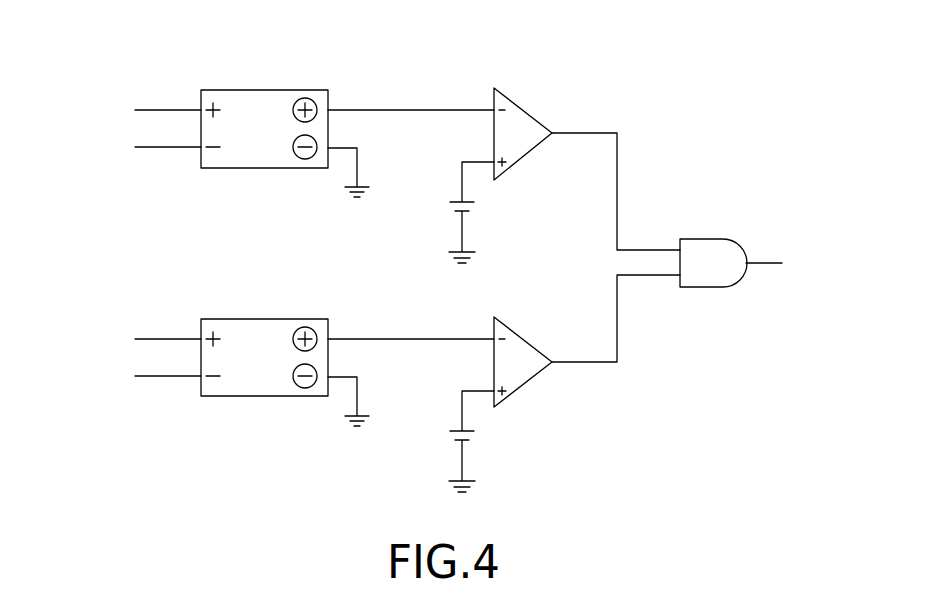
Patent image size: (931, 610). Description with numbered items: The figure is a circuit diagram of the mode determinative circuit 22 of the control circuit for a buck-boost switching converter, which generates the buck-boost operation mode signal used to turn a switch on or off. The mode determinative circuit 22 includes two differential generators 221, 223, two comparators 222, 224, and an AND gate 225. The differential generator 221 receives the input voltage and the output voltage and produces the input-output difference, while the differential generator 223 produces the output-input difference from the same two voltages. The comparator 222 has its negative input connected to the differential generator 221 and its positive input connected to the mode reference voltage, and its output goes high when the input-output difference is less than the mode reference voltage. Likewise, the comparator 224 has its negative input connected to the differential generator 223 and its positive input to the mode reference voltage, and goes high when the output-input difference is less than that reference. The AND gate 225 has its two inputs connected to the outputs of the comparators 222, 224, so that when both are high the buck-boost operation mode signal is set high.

The mode determinative circuit 22 is at (260, 556).
The differential generator 221 is at (267, 90).
The comparator 222 is at (527, 105).
The differential generator 223 is at (267, 319).
The comparator 224 is at (525, 388).
The AND gate 225 is at (700, 239).